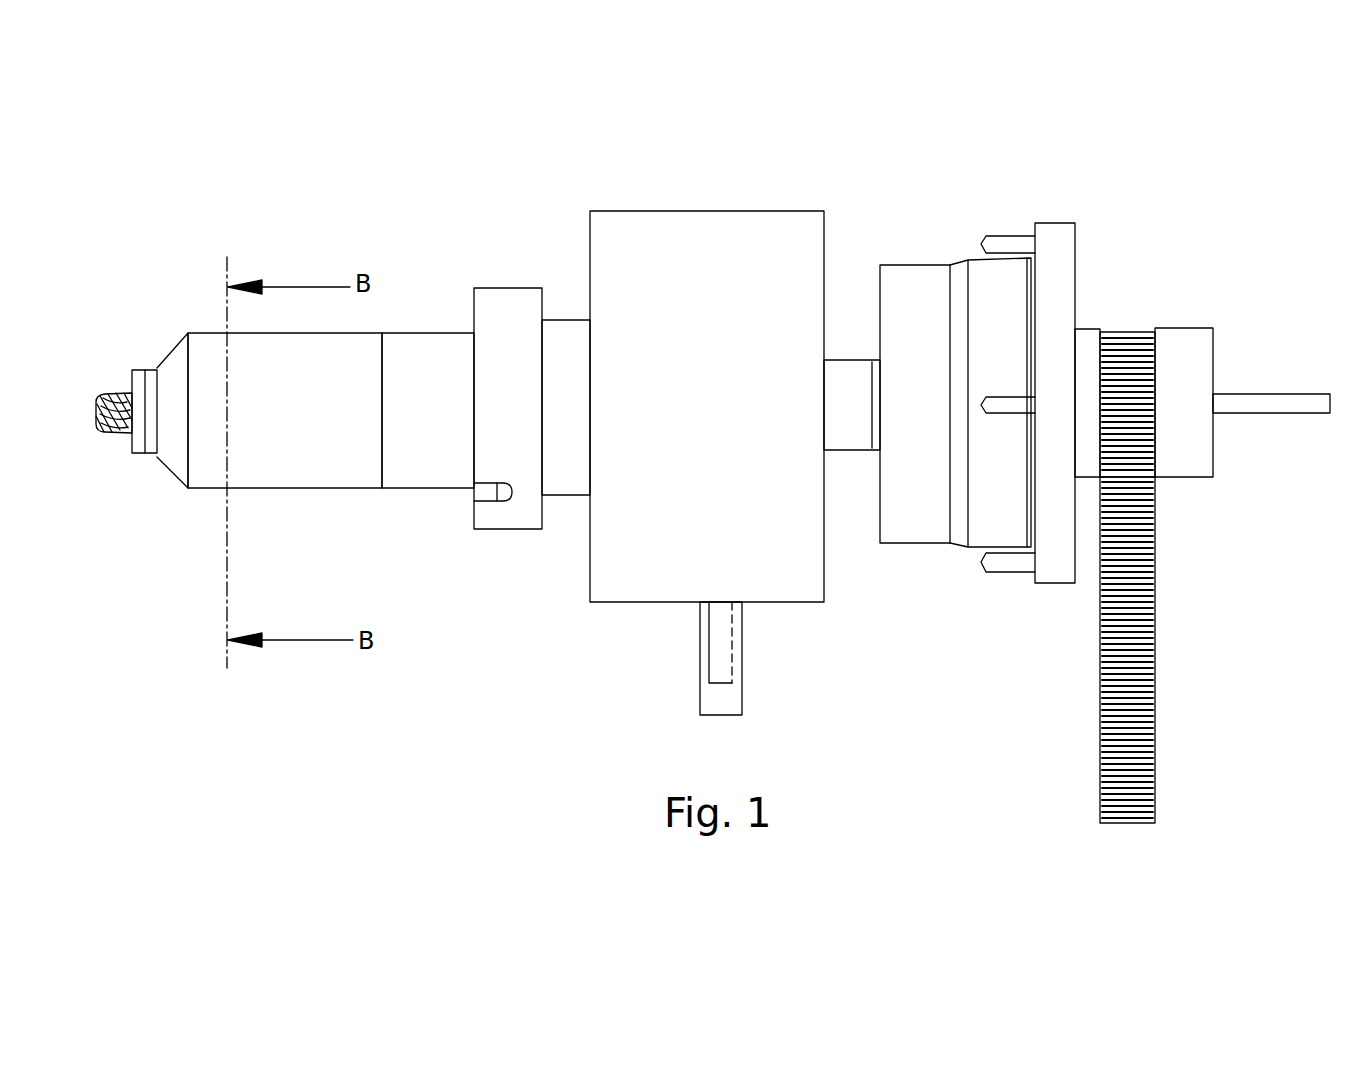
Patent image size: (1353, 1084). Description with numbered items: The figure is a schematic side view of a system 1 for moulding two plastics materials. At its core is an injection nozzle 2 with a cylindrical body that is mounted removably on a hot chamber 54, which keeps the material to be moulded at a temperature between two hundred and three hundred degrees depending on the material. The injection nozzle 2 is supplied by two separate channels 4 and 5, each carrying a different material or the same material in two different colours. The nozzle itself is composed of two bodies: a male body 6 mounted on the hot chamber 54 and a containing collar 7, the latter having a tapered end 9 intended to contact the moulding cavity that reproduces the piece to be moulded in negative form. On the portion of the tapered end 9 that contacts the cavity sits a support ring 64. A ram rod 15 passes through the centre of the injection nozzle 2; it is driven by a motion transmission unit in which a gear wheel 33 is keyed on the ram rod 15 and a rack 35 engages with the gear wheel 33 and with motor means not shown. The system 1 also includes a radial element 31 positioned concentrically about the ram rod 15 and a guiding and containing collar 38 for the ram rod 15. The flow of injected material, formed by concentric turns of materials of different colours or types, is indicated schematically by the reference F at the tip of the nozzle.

The system for moulding two plastics materials 1 is at (888, 224).
The injection nozzle 2 is at (364, 318).
The channel 4 is at (720, 645).
The channel 5 is at (733, 705).
The male body 6 is at (440, 489).
The containing collar 7 is at (288, 489).
The tapered end 9 is at (170, 460).
The ram rod 15 is at (1255, 398).
The radial element 31 is at (942, 546).
The gear wheel 33 is at (1133, 330).
The rack 35 is at (1157, 700).
The guiding and containing collar 38 is at (826, 458).
The hot chamber 54 is at (710, 225).
The support ring 64 is at (138, 368).
The flow of injected material F is at (113, 392).